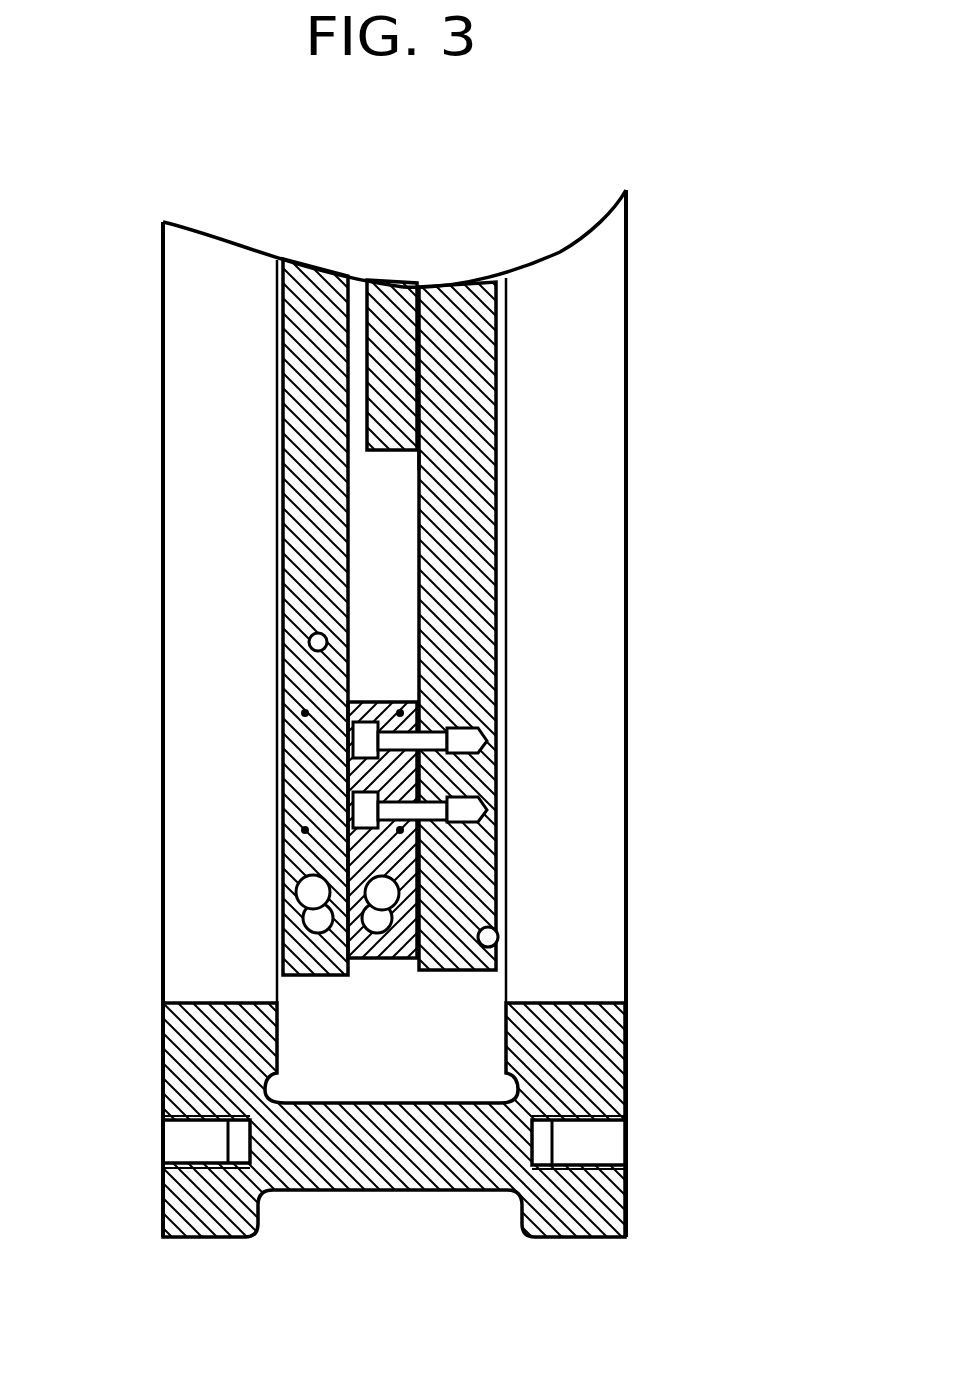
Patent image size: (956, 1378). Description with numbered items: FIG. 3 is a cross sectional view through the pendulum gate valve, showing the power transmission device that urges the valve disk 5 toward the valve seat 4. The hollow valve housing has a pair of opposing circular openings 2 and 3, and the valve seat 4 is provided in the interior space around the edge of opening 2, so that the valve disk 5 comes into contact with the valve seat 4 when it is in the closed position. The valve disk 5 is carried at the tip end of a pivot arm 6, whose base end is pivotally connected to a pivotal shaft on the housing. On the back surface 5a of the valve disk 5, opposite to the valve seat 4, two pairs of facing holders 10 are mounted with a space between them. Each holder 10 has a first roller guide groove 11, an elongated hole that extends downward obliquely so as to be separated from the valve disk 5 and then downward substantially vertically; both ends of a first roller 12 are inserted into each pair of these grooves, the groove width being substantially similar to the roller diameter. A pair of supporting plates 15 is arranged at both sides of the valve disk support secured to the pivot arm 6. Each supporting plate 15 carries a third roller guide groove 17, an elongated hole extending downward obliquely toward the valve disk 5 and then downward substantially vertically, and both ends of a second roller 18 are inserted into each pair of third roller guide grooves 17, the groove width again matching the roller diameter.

The circular opening 2 is at (597, 622).
The circular opening 3 is at (182, 577).
The valve seat 4 is at (500, 1048).
The valve disk 5 is at (475, 502).
The back surface 5a is at (401, 478).
The pivot arm 6 is at (380, 363).
The holder 10 is at (408, 940).
The first roller guide groove 11 is at (363, 958).
The first roller 12 is at (385, 890).
The supporting plate 15 is at (302, 735).
The third roller guide groove 17 is at (303, 937).
The second roller 18 is at (300, 882).